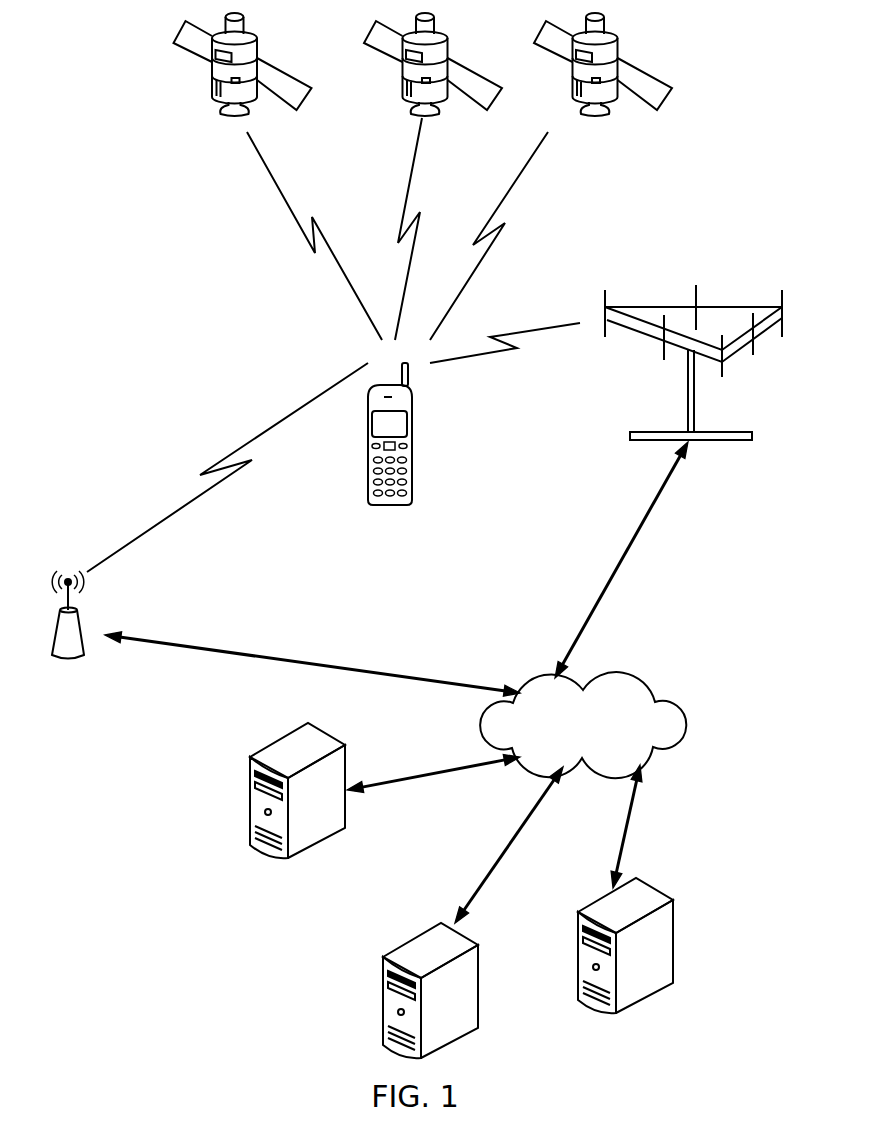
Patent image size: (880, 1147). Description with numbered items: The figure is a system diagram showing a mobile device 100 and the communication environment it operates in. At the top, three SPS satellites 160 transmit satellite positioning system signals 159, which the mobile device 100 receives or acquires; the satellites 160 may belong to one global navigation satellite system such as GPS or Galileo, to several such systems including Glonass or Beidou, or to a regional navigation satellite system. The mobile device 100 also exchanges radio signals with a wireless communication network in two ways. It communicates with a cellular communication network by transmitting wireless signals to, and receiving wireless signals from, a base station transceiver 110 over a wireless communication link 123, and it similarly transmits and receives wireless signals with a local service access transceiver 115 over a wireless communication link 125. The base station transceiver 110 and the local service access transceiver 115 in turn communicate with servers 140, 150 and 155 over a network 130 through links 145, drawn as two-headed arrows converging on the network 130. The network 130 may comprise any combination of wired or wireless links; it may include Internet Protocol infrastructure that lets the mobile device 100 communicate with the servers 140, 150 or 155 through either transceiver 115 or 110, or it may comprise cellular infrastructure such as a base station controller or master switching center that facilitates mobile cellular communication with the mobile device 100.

The mobile device 100 is at (368, 440).
The base station transceiver 110 is at (725, 443).
The local service access transceiver 115 is at (72, 660).
The wireless communication link 123 is at (475, 362).
The wireless communication link 125 is at (155, 527).
The network 130 is at (665, 700).
The server 140 is at (325, 730).
The links 145 is at (262, 658).
The server 150 is at (672, 898).
The server 155 is at (482, 967).
The satellite positioning system (SPS) signals 159 is at (282, 183).
The SPS satellites 160 is at (146, 74).